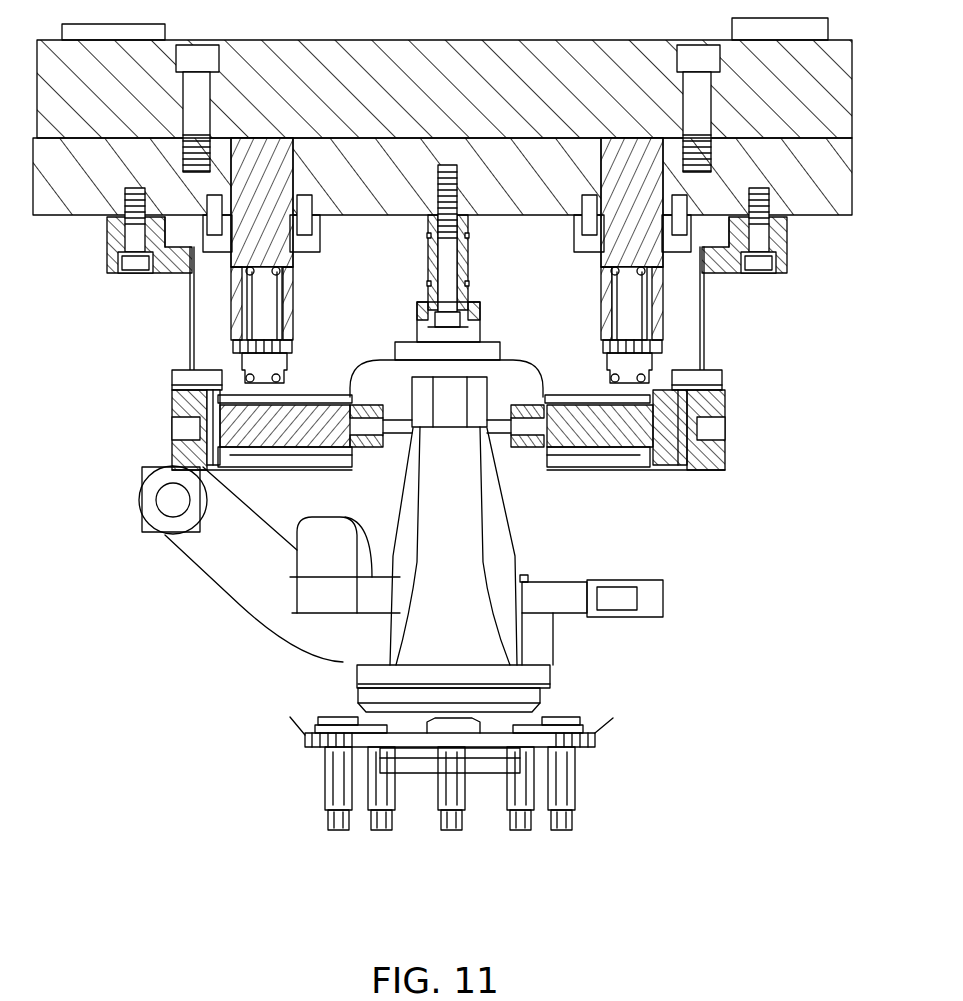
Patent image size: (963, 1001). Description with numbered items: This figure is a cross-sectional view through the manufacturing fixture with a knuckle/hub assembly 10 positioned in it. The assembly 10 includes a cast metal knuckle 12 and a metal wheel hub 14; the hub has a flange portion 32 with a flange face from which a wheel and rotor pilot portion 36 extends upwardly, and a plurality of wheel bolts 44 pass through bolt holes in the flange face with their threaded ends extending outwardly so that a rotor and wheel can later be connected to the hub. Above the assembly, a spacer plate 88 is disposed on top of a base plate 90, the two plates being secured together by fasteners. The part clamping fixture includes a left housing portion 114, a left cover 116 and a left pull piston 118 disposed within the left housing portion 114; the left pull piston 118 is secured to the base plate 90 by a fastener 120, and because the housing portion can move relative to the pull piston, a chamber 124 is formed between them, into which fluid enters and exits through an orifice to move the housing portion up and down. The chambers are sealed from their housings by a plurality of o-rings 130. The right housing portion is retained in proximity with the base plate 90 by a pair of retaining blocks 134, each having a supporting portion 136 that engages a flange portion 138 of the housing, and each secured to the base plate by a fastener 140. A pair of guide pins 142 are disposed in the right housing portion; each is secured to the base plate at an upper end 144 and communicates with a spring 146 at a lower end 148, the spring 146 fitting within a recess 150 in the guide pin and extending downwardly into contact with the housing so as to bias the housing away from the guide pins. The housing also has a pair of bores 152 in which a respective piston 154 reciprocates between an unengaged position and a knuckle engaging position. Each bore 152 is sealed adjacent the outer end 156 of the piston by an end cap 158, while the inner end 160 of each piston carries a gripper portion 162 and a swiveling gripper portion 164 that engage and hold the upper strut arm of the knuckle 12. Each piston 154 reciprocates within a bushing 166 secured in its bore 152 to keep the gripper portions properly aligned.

The knuckle/hub assembly 10 is at (651, 661).
The knuckle 12 is at (503, 552).
The wheel hub 14 is at (305, 735).
The flange portion 32 is at (597, 732).
The wheel and rotor pilot portion 36 is at (418, 775).
The wheel bolts 44 is at (553, 808).
The spacer plate 88 is at (845, 70).
The base plate 90 is at (847, 152).
The left housing portion 114 is at (390, 338).
The left cover 116 is at (496, 342).
The left pull piston 118 is at (468, 258).
The fastener 120 is at (453, 165).
The chamber 124 is at (475, 332).
The o-rings 130 is at (425, 280).
The retaining blocks 134 is at (115, 243).
The supporting portion 136 is at (167, 273).
The flange portion 138 is at (175, 237).
The fastener 140 is at (141, 190).
The guide pins 142 is at (282, 155).
The upper end 144 is at (240, 145).
The spring 146 is at (290, 310).
The lower end 148 is at (278, 330).
The recess 150 is at (277, 282).
The bores 152 is at (213, 405).
The piston 154 is at (212, 455).
The outer ends 156 is at (455, 407).
The end cap 158 is at (175, 408).
The inner ends 160 is at (327, 455).
The gripper portion 162 is at (368, 372).
The swiveling gripper portion 164 is at (493, 438).
The bushing 166 is at (295, 457).